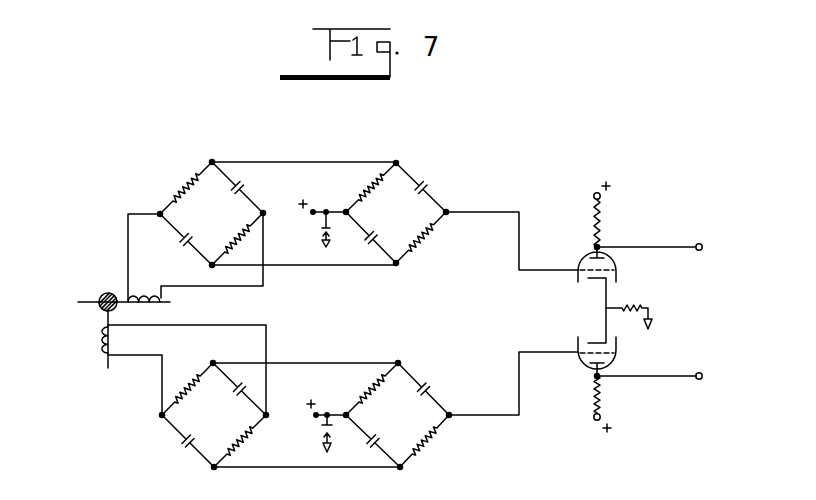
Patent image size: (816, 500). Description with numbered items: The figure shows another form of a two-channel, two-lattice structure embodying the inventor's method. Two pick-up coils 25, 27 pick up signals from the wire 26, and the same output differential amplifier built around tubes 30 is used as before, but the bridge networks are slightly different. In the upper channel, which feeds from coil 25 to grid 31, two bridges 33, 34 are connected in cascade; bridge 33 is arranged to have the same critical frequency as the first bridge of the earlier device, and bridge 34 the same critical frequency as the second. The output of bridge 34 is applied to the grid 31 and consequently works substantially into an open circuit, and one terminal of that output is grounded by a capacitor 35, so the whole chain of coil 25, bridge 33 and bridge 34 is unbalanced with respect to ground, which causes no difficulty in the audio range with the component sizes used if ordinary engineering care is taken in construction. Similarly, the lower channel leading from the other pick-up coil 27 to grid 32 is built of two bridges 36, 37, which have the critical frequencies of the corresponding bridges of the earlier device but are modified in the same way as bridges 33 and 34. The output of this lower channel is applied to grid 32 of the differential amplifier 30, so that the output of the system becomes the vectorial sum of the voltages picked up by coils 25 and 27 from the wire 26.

The pick-up coil 25 is at (138, 297).
The wire 26 is at (101, 292).
The pick-up coil 27 is at (120, 341).
The output differential amplifier tubes 30 is at (619, 342).
The grid 31 is at (586, 258).
The grid 32 is at (585, 366).
The bridge 33 is at (206, 176).
The bridge 34 is at (400, 182).
The capacitor 35 is at (312, 232).
The bridge 36 is at (187, 420).
The bridge 37 is at (432, 417).